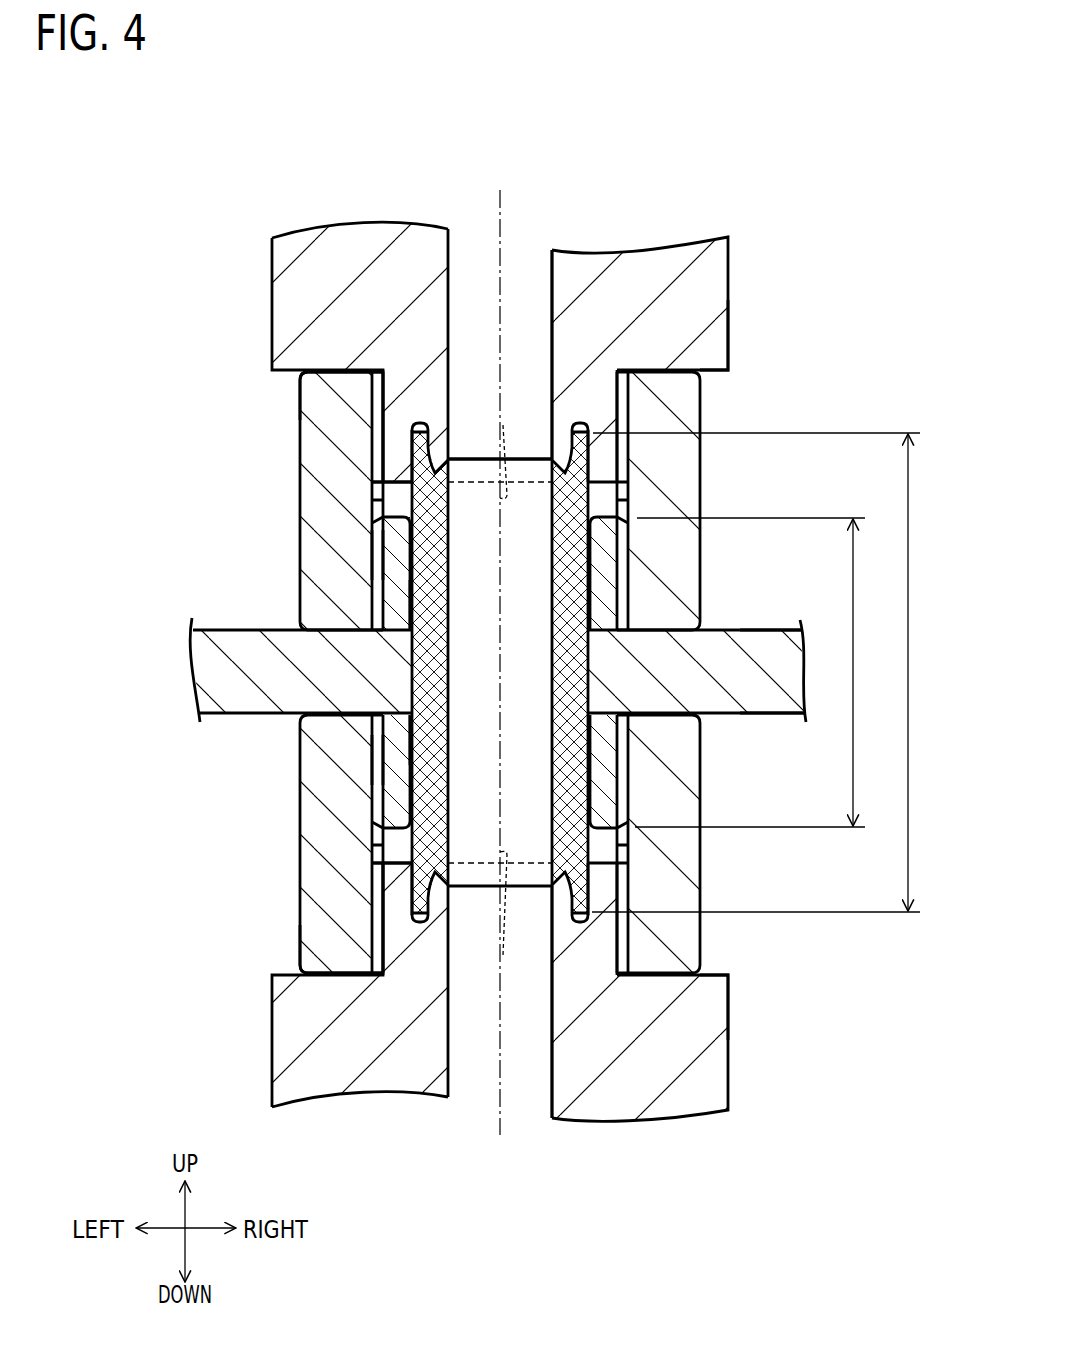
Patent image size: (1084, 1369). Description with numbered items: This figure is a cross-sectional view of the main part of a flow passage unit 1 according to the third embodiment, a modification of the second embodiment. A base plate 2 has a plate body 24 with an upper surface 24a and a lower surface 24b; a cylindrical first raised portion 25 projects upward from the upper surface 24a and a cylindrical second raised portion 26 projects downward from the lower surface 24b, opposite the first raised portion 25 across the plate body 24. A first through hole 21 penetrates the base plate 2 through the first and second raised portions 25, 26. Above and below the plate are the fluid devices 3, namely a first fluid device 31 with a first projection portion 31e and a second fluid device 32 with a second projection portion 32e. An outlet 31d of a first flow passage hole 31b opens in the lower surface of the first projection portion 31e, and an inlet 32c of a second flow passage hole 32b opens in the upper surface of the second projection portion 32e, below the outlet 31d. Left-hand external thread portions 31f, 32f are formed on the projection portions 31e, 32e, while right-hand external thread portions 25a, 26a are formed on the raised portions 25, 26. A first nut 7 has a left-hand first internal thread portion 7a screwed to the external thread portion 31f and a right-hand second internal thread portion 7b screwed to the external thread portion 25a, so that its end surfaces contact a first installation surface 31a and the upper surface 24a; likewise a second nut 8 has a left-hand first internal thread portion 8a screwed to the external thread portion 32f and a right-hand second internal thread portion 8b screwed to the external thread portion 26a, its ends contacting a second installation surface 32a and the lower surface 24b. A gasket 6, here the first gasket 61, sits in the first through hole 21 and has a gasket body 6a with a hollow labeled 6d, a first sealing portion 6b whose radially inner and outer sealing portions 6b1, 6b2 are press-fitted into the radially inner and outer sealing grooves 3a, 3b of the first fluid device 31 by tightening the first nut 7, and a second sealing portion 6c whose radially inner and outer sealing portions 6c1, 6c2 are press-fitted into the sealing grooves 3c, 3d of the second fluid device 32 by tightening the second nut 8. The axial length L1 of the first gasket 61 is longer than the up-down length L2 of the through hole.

The flow passage unit 1 is at (177, 152).
The base plate 2 is at (463, 673).
The first through hole 21 is at (412, 680).
The plate body 24 is at (733, 629).
The upper surface 24a is at (777, 629).
The lower surface 24b is at (777, 716).
The housing 3 is at (500, 686).
The first fluid device 31 is at (266, 267).
The first installation surface 31a is at (708, 371).
The first flow passage hole 31b is at (532, 262).
The outlet 31d is at (503, 449).
The first projection portion 31e is at (603, 421).
The external thread portion 31f is at (372, 442).
The second fluid device 32 is at (266, 1044).
The second installation surface 32a is at (710, 977).
The second flow passage hole 32b is at (530, 1100).
The inlet 32c is at (501, 903).
The second projection portion 32e is at (604, 924).
The external thread portion 32f is at (372, 933).
The radially inner sealing groove 3a is at (536, 460).
The radially outer sealing groove 3b is at (582, 426).
The radially inner sealing groove 3c is at (535, 887).
The radially outer sealing groove 3d is at (580, 923).
The gasket 6 is at (470, 674).
The first gasket 61 is at (472, 456).
The gasket body 6a is at (444, 592).
The first sealing portion 6b is at (402, 303).
The radially inner sealing portion 6b1 is at (440, 455).
The radially outer sealing portion 6b2 is at (432, 470).
The second sealing portion 6c is at (402, 1043).
The radially inner sealing portion 6c1 is at (440, 890).
The radially outer sealing portion 6c2 is at (432, 875).
The hollow of bushing 6d is at (536, 681).
The first nut 7 is at (705, 494).
The first internal thread portion 7a is at (379, 417).
The second internal thread portion 7b is at (380, 565).
The second nut 8 is at (705, 857).
The first internal thread portion 8a is at (380, 912).
The second internal thread portion 8b is at (380, 771).
The first raised portion 25 is at (604, 564).
The external thread portion 25a is at (372, 592).
The second raised portion 26 is at (604, 783).
The external thread portion 26a is at (372, 788).
The length in the axial direction of the first gasket L1 is at (765, 672).
The length in the up-down direction of the through hole L2 is at (759, 672).